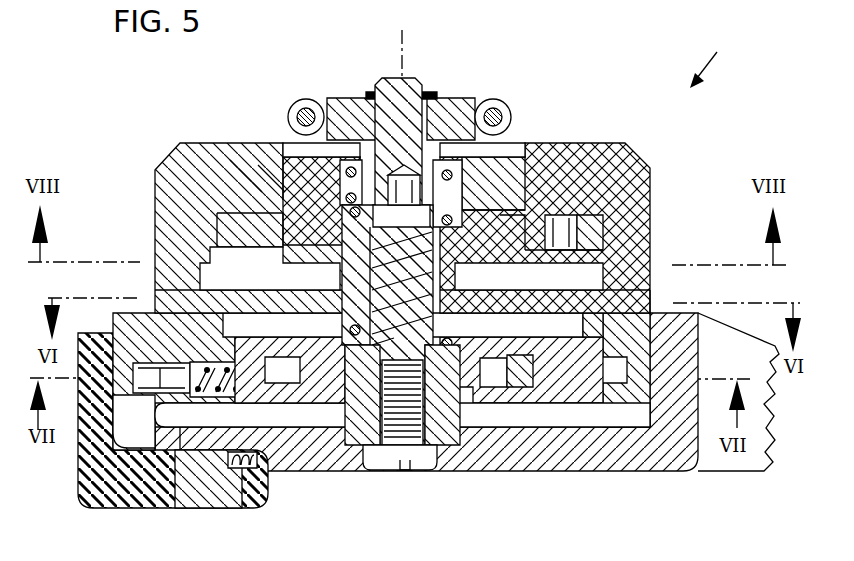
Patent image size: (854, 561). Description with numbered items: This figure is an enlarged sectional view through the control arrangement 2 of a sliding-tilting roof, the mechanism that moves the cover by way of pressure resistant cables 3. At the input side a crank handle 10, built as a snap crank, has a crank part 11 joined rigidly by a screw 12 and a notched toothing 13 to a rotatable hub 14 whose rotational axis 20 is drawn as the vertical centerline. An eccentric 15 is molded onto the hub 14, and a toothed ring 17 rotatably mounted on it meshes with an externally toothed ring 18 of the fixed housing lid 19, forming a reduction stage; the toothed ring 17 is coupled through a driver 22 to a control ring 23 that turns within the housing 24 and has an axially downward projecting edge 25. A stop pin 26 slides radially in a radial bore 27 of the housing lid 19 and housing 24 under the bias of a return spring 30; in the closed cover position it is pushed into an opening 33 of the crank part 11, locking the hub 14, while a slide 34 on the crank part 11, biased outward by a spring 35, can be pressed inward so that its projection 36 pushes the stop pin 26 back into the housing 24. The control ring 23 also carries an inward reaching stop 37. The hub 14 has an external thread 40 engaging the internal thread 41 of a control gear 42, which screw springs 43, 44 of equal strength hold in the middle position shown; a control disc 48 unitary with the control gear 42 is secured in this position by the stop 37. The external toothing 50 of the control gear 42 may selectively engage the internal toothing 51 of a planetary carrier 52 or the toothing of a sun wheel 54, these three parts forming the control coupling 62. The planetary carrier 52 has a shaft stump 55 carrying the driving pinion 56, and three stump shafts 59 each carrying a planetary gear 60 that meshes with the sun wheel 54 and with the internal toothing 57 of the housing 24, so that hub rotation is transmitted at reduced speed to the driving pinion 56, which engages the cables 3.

The control arrangement 2 is at (710, 57).
The pressure resistant cables 3 is at (306, 110).
The crank handle 10 is at (728, 472).
The crank part 11 is at (672, 447).
The screw 12 is at (420, 464).
The notched toothing (splines) 13 is at (462, 420).
The hub 14 is at (392, 442).
The eccentric 15 is at (327, 400).
The toothed ring 17 is at (522, 378).
The externally toothed ring 18 is at (491, 400).
The housing lid 19 is at (604, 400).
The rotational axis 20 is at (404, 50).
The driver 22 is at (278, 395).
The control ring 23 is at (640, 306).
The housing 24 is at (618, 163).
The edge 25 is at (650, 372).
The stop pin 26 is at (148, 425).
The radial bore 27 is at (183, 450).
The return spring 30 is at (218, 400).
The opening 33 is at (165, 468).
The slide 34 is at (130, 500).
The spring 35 is at (242, 470).
The projection 36 is at (127, 345).
The stop 37 is at (602, 242).
The external thread 40 is at (270, 165).
The internal thread 41 is at (518, 210).
The control gear 42 is at (562, 232).
The screw spring 43 is at (349, 195).
The screw spring 44 is at (357, 400).
The control disc 48 is at (602, 272).
The external toothing 50 is at (240, 162).
The internal toothing 51 is at (478, 185).
The planetary carrier 52 is at (228, 222).
The sun wheel 54 is at (207, 160).
The shaft stump 55 is at (446, 108).
The driving pinion 56 is at (437, 96).
The internal toothing 57 is at (215, 262).
The stump shafts 59 is at (620, 205).
The planetary gear 60 is at (580, 220).
The control coupling 62 is at (300, 168).